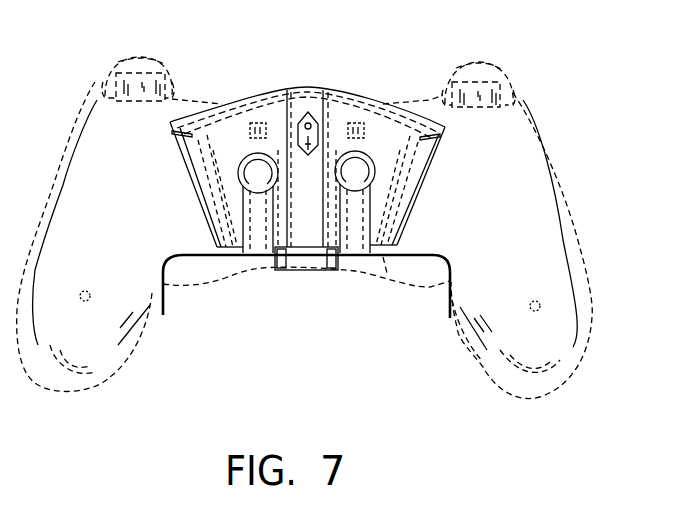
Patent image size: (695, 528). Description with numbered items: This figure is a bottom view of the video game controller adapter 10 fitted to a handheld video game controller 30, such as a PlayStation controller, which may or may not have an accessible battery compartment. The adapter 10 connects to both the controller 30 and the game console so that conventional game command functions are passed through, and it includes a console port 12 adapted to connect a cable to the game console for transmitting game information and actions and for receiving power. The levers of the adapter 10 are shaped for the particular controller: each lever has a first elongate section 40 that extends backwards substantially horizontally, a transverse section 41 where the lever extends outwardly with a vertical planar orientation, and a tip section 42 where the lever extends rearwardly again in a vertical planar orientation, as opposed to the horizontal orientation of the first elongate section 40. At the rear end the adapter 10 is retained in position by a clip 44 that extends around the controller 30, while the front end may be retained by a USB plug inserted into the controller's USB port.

The video game controller adapter 10 is at (344, 115).
The console port 12 is at (303, 84).
The handheld video game controller 30 is at (510, 140).
The first elongate section 40 is at (256, 204).
The transverse section 41 is at (201, 254).
The tip section 42 is at (167, 298).
The clip 44 is at (303, 270).